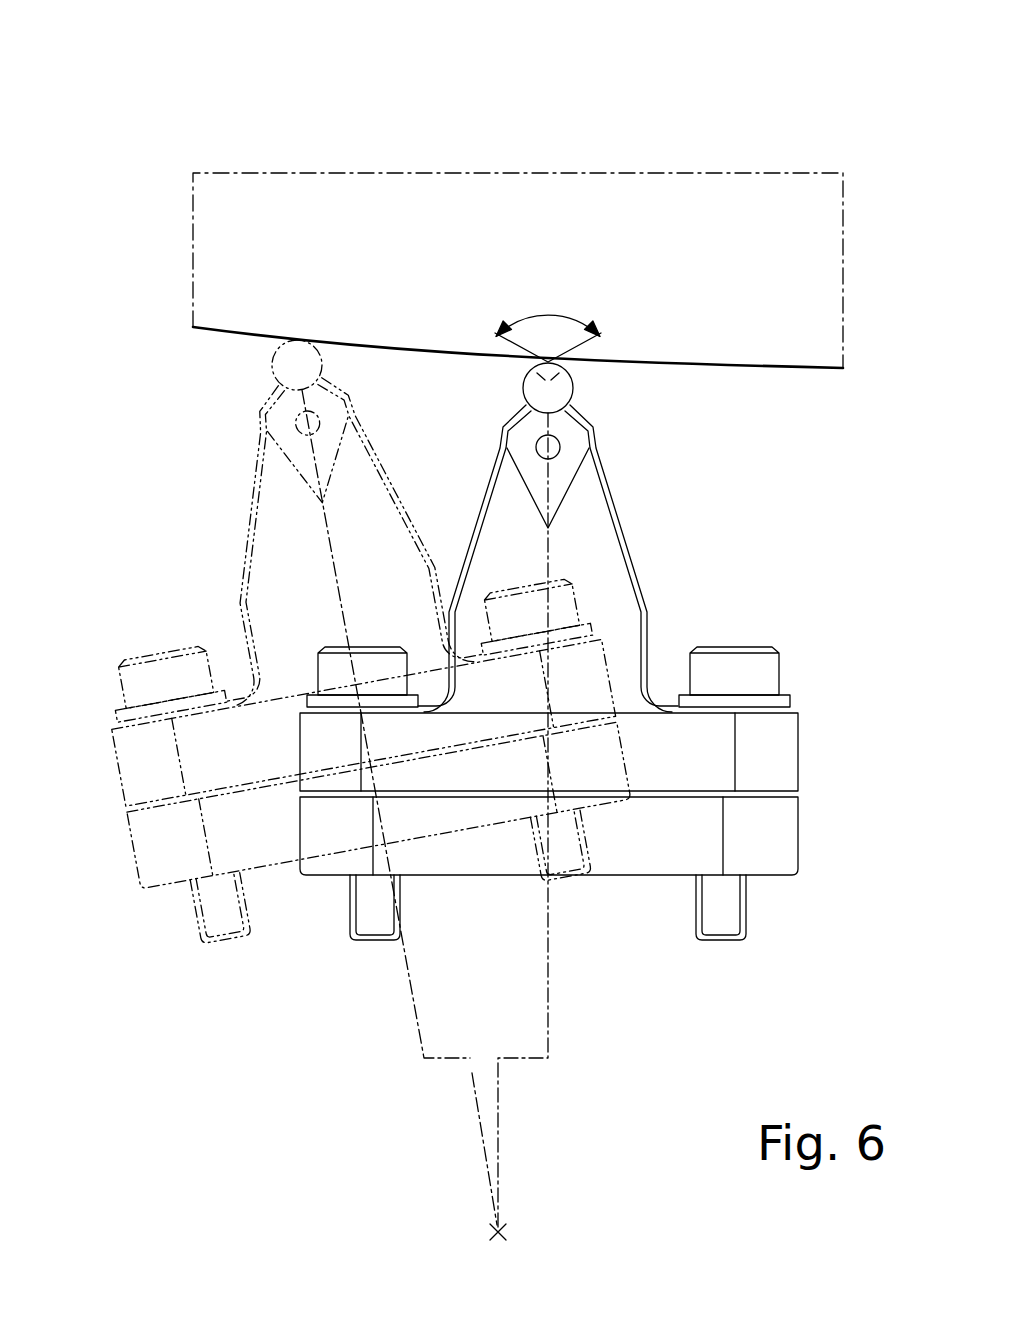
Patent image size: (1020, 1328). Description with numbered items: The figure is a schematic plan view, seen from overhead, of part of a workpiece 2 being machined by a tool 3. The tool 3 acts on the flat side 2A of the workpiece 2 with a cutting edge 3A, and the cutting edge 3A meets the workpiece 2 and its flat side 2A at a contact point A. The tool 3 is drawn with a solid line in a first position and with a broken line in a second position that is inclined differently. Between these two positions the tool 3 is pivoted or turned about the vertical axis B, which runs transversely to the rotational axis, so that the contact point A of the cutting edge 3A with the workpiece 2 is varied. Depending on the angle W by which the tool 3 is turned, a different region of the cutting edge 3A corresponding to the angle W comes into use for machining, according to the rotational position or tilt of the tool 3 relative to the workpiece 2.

The workpiece 2 is at (386, 210).
The flat side 2A is at (723, 368).
The tool 3 is at (660, 559).
The cutting edge 3A is at (572, 372).
The contact point A is at (300, 345).
The angle W is at (543, 313).
The vertical axis B is at (492, 1234).